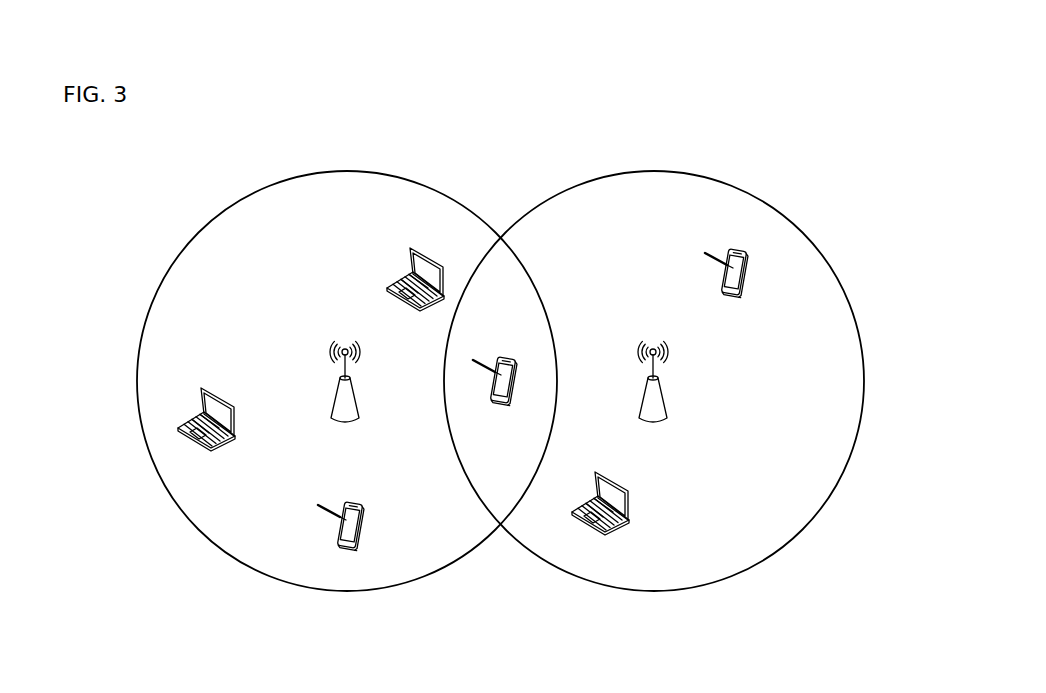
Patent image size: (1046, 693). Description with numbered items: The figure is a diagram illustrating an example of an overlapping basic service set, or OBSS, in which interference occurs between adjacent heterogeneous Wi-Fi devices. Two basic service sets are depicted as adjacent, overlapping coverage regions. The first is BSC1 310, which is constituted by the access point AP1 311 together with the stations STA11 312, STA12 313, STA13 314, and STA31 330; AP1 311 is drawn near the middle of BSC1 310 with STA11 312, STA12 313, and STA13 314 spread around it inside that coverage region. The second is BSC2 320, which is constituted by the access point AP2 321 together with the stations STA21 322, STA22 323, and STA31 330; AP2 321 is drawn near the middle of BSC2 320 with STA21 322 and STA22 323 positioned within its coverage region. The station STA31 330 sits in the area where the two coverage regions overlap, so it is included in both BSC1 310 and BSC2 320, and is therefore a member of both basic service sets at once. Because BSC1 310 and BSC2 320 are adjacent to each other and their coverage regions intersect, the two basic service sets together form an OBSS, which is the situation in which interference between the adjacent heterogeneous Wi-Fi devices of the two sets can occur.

The BSC1 310 is at (293, 588).
The AP1 311 is at (337, 400).
The STA11 312 is at (177, 425).
The STA12 313 is at (340, 523).
The STA13 314 is at (423, 250).
The BSC2 320 is at (708, 588).
The AP2 321 is at (650, 337).
The STA21 322 is at (573, 515).
The STA22 323 is at (733, 249).
The STA31 330 is at (500, 357).